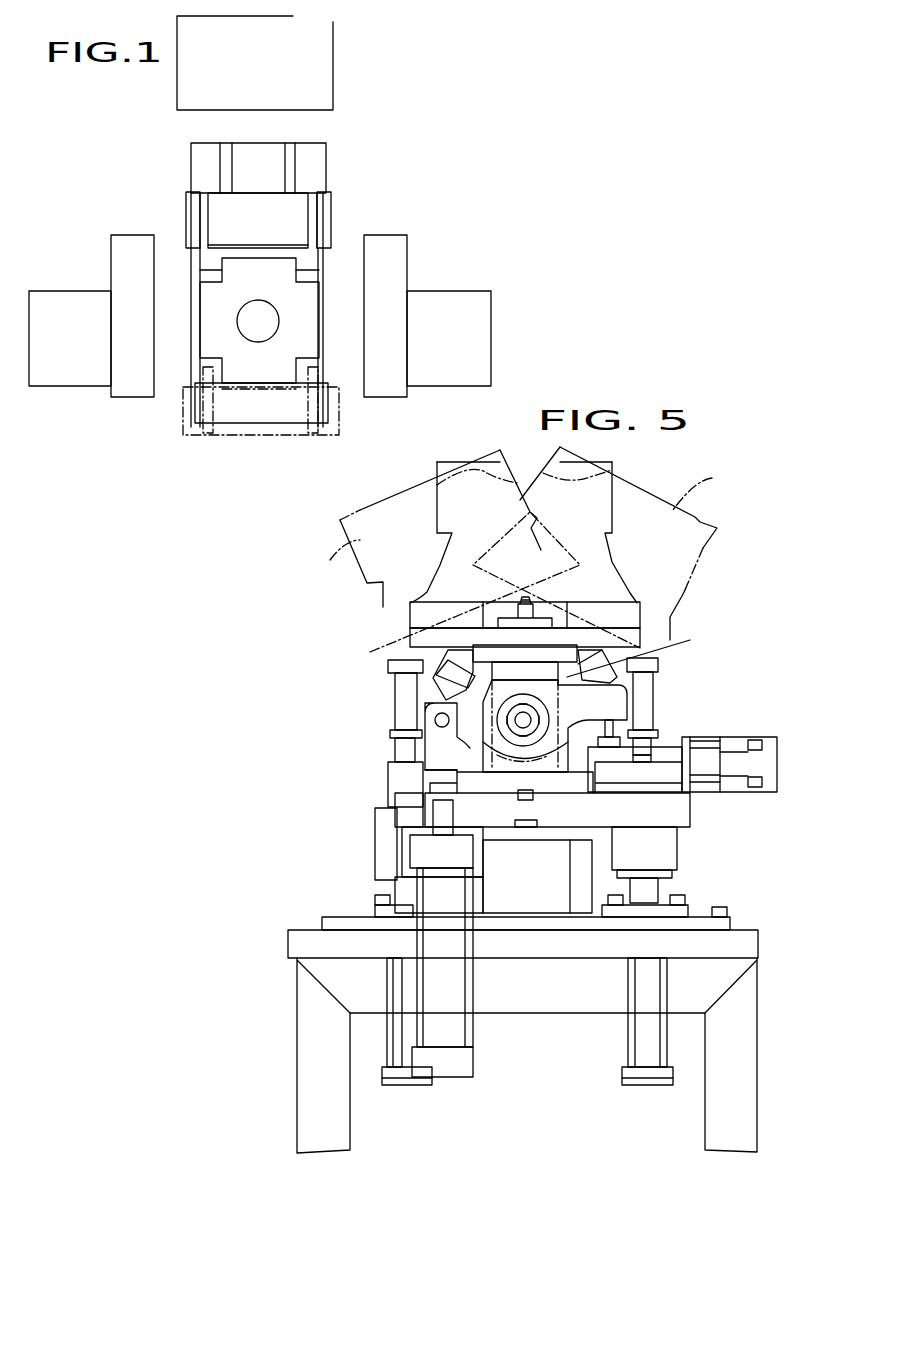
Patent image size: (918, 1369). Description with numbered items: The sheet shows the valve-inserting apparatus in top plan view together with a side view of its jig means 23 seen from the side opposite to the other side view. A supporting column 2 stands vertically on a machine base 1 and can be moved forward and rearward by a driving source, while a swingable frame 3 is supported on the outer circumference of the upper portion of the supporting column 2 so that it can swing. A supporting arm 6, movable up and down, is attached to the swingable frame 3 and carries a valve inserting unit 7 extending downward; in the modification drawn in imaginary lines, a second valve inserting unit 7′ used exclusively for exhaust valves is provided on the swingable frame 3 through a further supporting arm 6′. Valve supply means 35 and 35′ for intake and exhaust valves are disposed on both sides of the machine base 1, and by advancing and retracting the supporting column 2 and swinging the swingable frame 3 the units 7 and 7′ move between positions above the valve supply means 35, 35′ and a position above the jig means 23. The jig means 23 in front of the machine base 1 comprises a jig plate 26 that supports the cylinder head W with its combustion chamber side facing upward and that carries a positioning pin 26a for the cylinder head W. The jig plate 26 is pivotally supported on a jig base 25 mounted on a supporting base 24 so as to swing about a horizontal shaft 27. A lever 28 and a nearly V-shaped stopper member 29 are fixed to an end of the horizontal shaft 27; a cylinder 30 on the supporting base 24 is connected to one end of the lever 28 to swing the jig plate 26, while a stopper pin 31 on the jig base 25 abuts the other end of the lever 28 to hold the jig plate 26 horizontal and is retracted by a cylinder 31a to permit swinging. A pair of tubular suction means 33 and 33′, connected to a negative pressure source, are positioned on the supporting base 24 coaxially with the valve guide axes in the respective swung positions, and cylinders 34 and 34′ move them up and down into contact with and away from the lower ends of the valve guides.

In FIG. 1, the machine base 1 is at (224, 398).
In FIG. 1, the supporting column 2 is at (258, 328).
In FIG. 1, the swingable frame 3 is at (305, 345).
In FIG. 1, the supporting arm 6 is at (203, 205).
In FIG. 1, the supporting arm 6′ is at (208, 390).
In FIG. 1, the valve inserting unit 7 is at (340, 207).
In FIG. 1, the valve inserting unit 7′ is at (287, 435).
In FIG. 1, the jig means 23 is at (325, 77).
In FIG. 5, the jig means 23 is at (333, 679).
In FIG. 5, the supporting base 24 is at (297, 1070).
In FIG. 5, the jig base 25 is at (673, 812).
In FIG. 5, the jig plate 26 is at (640, 637).
In FIG. 5, the positioning pin 26a is at (527, 596).
In FIG. 5, the horizontal shaft 27 is at (517, 723).
In FIG. 5, the lever 28 is at (618, 700).
In FIG. 5, the stopper member 29 is at (670, 665).
In FIG. 5, the cylinder 30 is at (462, 1067).
In FIG. 5, the stopper pin 31 is at (620, 727).
In FIG. 5, the cylinder 31a is at (766, 790).
In FIG. 5, the tubular suction means 33 is at (650, 713).
In FIG. 5, the tubular suction means 33′ is at (400, 698).
In FIG. 5, the cylinder 34 is at (640, 1027).
In FIG. 5, the cylinder 34′ is at (410, 1087).
In FIG. 1, the valve supply means 35 is at (99, 230).
In FIG. 1, the valve supply means 35′ is at (418, 232).
In FIG. 5, the cylinder head W is at (522, 562).